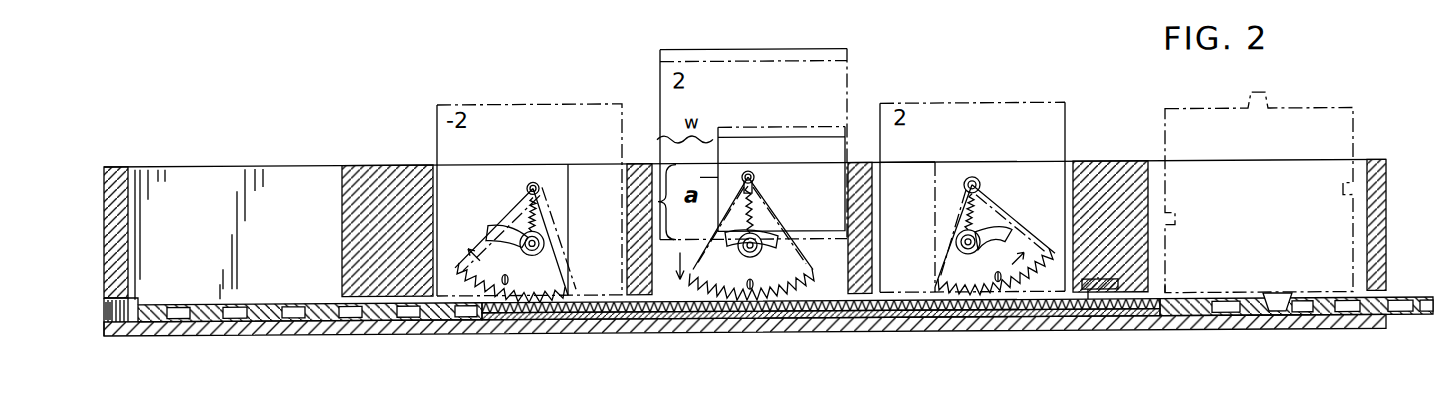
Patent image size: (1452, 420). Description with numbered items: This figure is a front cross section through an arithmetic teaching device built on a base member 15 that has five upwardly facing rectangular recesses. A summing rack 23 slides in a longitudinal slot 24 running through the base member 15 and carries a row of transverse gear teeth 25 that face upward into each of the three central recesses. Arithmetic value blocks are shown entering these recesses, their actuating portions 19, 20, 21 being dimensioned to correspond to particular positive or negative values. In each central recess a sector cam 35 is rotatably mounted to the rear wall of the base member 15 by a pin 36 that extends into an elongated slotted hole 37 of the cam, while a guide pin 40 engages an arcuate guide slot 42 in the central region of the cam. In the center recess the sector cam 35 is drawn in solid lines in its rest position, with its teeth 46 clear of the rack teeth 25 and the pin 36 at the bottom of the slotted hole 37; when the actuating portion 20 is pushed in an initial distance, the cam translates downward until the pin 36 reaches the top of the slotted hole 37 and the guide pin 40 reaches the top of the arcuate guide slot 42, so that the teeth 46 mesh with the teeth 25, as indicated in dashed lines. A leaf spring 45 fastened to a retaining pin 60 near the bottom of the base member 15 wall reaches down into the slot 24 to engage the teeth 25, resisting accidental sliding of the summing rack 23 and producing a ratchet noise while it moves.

The base member 15 is at (115, 167).
The actuating portion 19 is at (598, 287).
The actuating portion 20 is at (703, 183).
The actuating portion 21 is at (908, 207).
The summing rack 23 is at (318, 312).
The longitudinal slot 24 is at (128, 305).
The transverse gear teeth 25 is at (622, 316).
The sector cam 35 is at (765, 221).
The pin 36 is at (545, 191).
The elongated slotted hole 37 is at (541, 197).
The guide pin 40 is at (733, 251).
The arcuate guide slot 42 is at (776, 243).
The leaf spring 45 is at (1105, 293).
The teeth 46 is at (455, 265).
The retaining pin 60 is at (1088, 300).